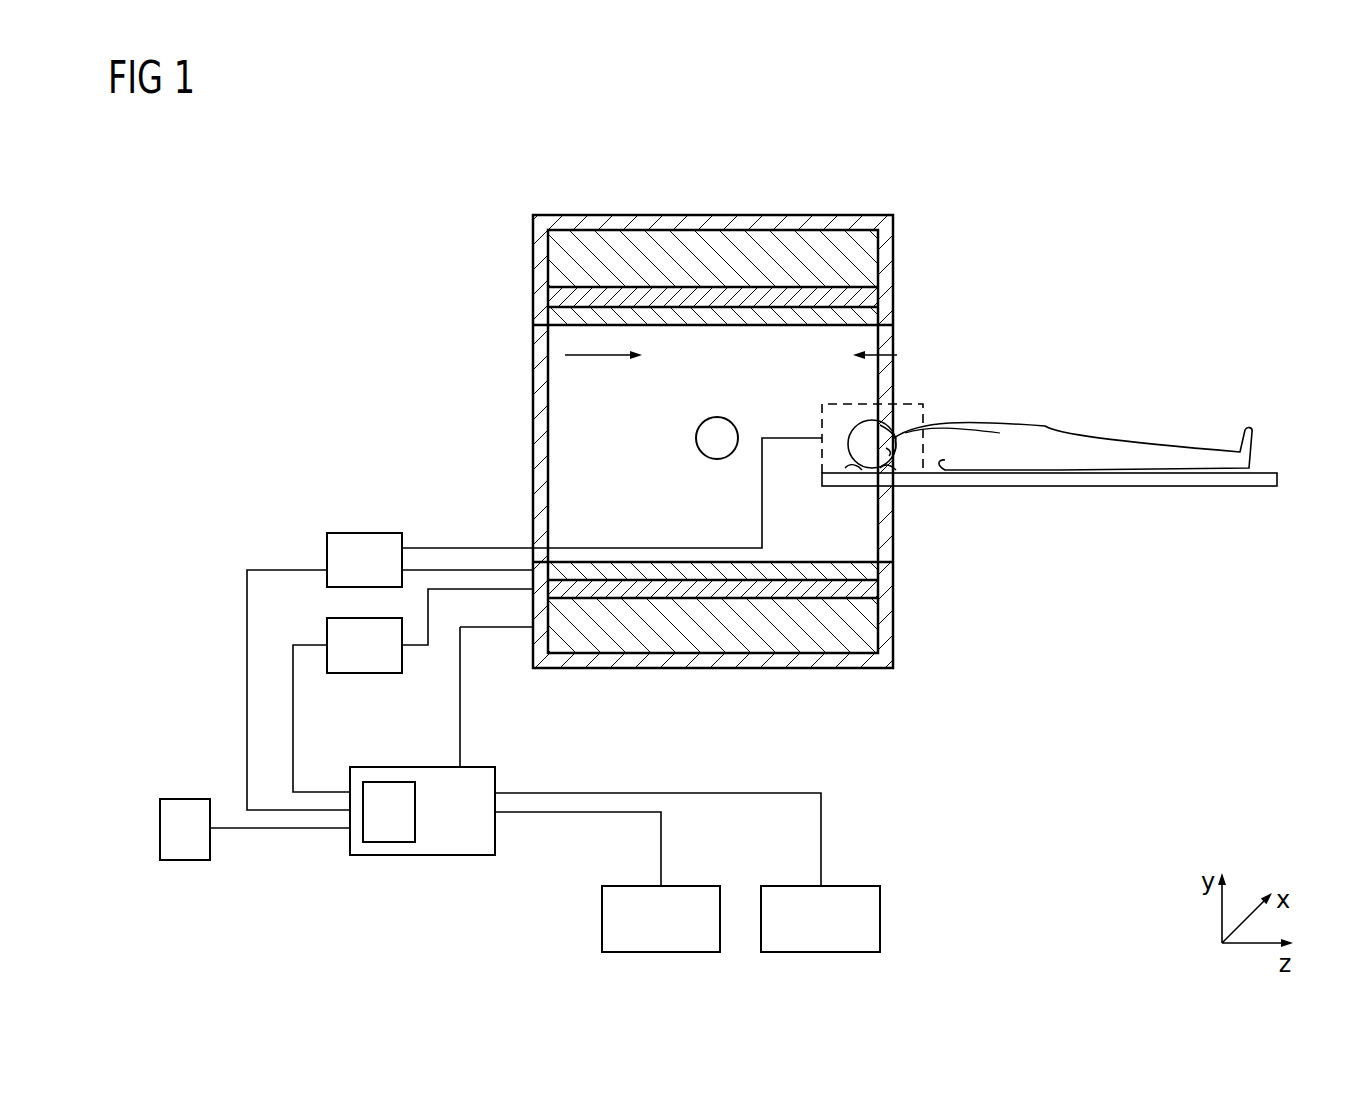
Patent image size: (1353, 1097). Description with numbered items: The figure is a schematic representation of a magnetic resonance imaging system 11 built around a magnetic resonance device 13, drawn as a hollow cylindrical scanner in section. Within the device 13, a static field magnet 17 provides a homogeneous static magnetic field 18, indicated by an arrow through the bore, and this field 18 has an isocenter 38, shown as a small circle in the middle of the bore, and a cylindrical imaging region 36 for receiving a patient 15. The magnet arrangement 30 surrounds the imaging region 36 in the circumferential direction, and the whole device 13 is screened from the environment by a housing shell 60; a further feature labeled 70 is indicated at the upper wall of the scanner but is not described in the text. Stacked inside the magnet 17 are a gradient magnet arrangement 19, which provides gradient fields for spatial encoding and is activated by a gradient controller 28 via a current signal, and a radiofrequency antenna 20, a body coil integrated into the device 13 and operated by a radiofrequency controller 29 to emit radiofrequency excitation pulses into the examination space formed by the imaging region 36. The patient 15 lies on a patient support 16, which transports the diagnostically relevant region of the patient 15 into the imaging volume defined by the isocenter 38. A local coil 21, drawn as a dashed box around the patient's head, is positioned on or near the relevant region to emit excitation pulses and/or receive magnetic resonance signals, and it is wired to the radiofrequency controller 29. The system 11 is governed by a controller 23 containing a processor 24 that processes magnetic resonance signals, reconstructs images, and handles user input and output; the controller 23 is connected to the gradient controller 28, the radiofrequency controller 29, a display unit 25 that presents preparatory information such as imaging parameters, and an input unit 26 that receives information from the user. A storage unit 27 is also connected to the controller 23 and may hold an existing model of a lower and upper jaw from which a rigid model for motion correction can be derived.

The magnetic resonance imaging system 11 is at (711, 392).
The magnetic resonance device 13 is at (711, 392).
The patient 15 is at (1128, 460).
The patient support 16 is at (1113, 488).
The static field magnet 17 is at (870, 255).
The static magnetic field 18 is at (585, 358).
The gradient magnet arrangement 19 is at (553, 297).
The radiofrequency antenna 20 is at (553, 318).
The local coil 21 is at (925, 420).
The controller 23 is at (585, 798).
The processor 24 is at (388, 843).
The display unit 25 is at (602, 918).
The input unit 26 is at (880, 918).
The storage unit 27 is at (185, 799).
The gradient controller 28 is at (365, 673).
The radiofrequency controller 29 is at (365, 533).
The magnet arrangement 30 is at (885, 195).
The imaging region 36 is at (880, 355).
The isocenter 38 is at (693, 440).
The housing shell 60 is at (702, 226).
The housing cover 70 is at (595, 218).